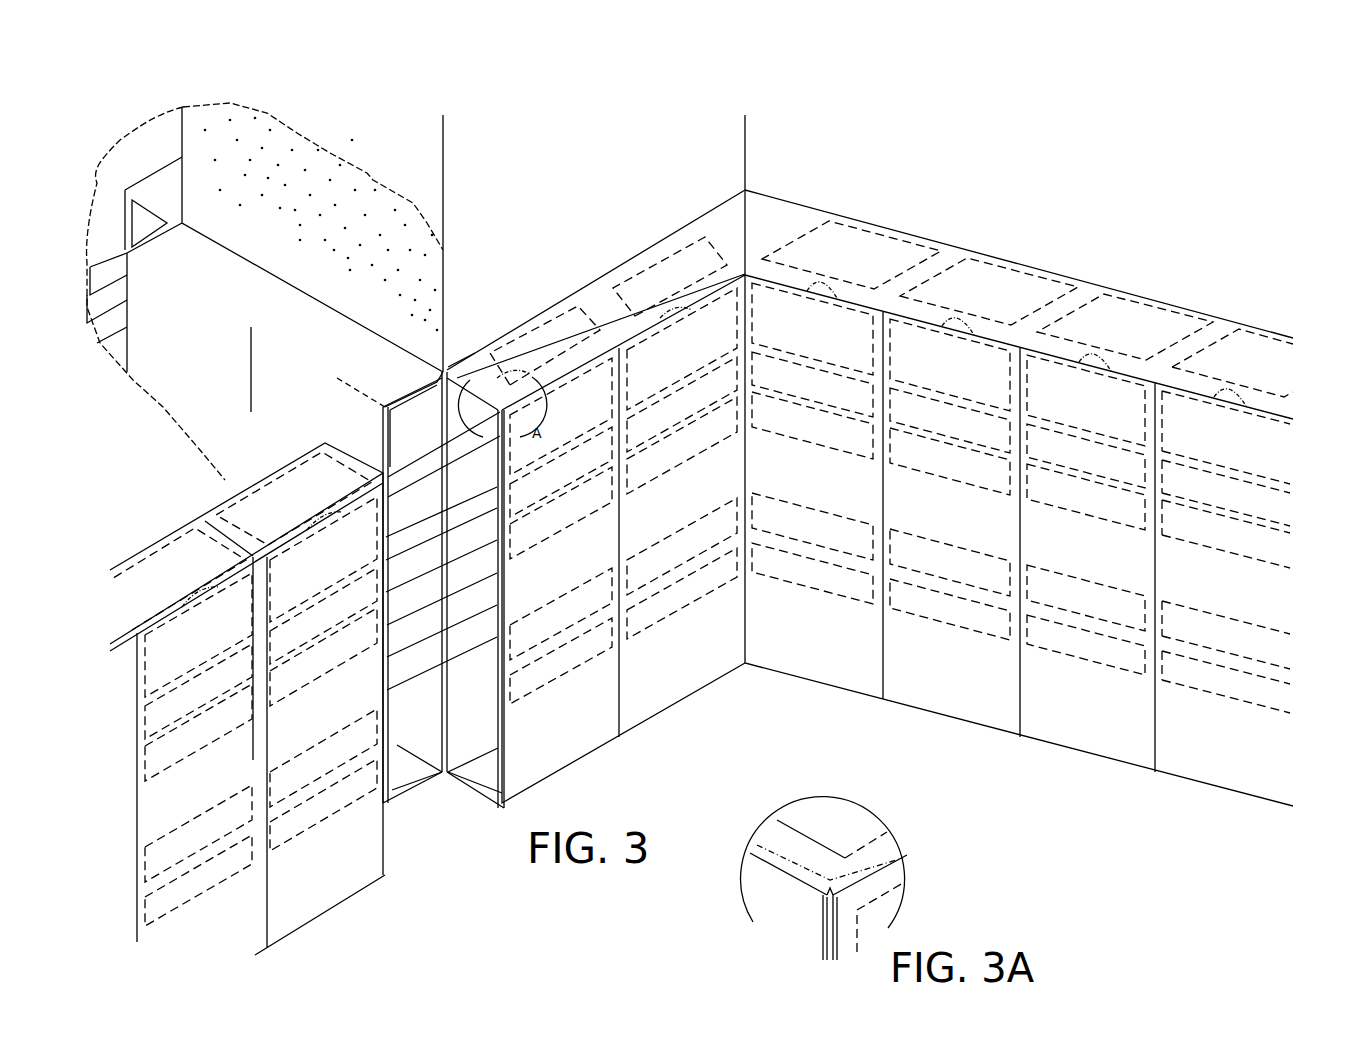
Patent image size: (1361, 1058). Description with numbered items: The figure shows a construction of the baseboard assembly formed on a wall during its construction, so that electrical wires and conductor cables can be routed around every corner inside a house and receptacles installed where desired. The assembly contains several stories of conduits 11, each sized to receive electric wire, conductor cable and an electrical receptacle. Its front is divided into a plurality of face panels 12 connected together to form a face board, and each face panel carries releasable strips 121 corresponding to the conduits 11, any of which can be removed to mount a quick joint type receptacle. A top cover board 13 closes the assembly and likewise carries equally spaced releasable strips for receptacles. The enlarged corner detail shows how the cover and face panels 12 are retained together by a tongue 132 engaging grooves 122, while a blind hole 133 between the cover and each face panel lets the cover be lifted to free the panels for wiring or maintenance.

In FIG. 3, the conduits 11 is at (572, 308).
In FIG. 3, the face panels 12 is at (595, 733).
In FIG. 3, the top cover board 13 is at (530, 345).
In FIG. 3, the releasable strips 121 is at (558, 620).
In FIG. 3, the blind hole 133 is at (680, 308).
In FIG. 3A, the tongue 132 is at (828, 865).
In FIG. 3A, the grooves 122 is at (813, 921).